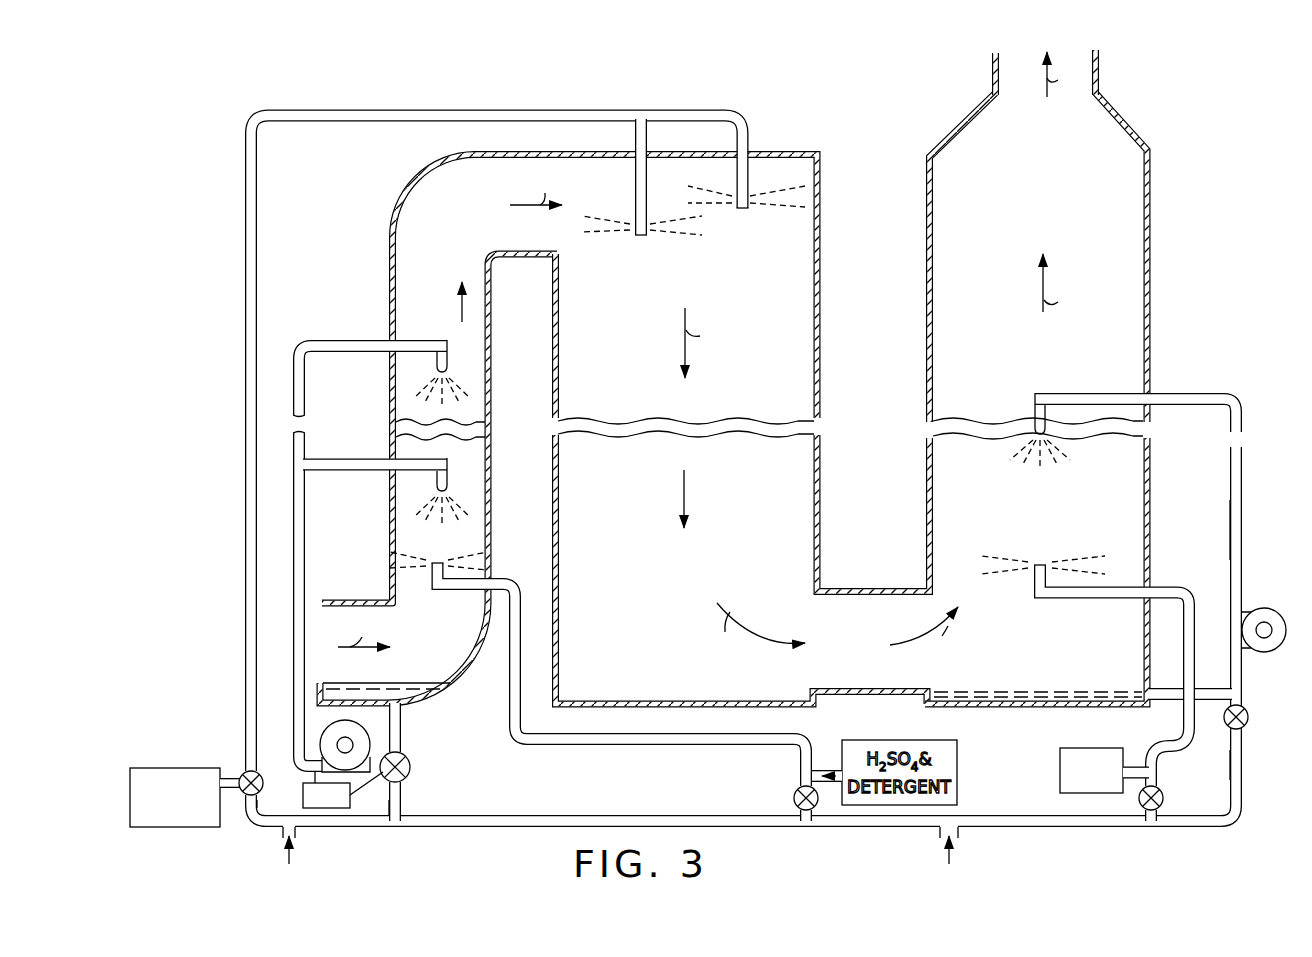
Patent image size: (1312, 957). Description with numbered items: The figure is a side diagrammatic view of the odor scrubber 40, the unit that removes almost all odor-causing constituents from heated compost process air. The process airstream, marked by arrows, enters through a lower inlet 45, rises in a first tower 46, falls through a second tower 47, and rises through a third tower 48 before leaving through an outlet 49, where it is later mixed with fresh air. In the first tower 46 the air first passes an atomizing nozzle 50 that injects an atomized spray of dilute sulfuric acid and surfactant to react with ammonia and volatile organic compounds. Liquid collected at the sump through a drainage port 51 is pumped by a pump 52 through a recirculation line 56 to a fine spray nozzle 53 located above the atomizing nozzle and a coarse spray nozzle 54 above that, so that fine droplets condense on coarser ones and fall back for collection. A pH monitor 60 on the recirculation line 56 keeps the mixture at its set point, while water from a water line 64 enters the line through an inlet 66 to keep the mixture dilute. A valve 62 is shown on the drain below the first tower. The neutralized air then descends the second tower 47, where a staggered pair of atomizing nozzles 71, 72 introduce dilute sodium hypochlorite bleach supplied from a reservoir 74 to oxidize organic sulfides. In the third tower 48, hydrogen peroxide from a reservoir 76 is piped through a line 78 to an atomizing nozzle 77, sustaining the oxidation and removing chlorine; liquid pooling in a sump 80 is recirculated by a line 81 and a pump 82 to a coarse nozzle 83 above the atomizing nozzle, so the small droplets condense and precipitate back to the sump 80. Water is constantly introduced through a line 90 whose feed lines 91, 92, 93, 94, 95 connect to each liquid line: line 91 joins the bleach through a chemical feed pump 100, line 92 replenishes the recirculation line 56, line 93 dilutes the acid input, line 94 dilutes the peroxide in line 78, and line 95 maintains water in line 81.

The odor scrubber 40 is at (866, 327).
The lower inlet 45 is at (327, 632).
The first tower 46 is at (413, 290).
The second tower 47 is at (614, 505).
The third tower 48 is at (983, 342).
The outlet 49 is at (1010, 70).
The atomizing nozzle 50 is at (440, 578).
The drainage port 51 is at (400, 705).
The pump 52 is at (322, 738).
The fine spray nozzle 53 is at (446, 468).
The coarse spray nozzle 54 is at (449, 360).
The recirculation line 56 is at (305, 518).
The pH monitor 60 is at (332, 808).
The valve 62 is at (411, 766).
The water line 64 is at (504, 813).
The inlet 66 is at (402, 798).
The atomizing nozzle 71 is at (636, 192).
The atomizing nozzle 72 is at (750, 176).
The reservoir 74 is at (207, 818).
The reservoir 76 is at (1060, 762).
The atomizing nozzle 77 is at (1040, 563).
The line 78 is at (1193, 650).
The sump 80 is at (1045, 688).
The line 81 is at (1232, 528).
The pump 82 is at (1268, 612).
The nozzle 83 is at (1035, 408).
The line 90 is at (658, 813).
The feed line 91 is at (263, 812).
The feed line 92 is at (386, 820).
The feed line 93 is at (795, 806).
The feed line 94 is at (1160, 806).
The feed line 95 is at (1243, 764).
The chemical feed pump 100 is at (243, 775).